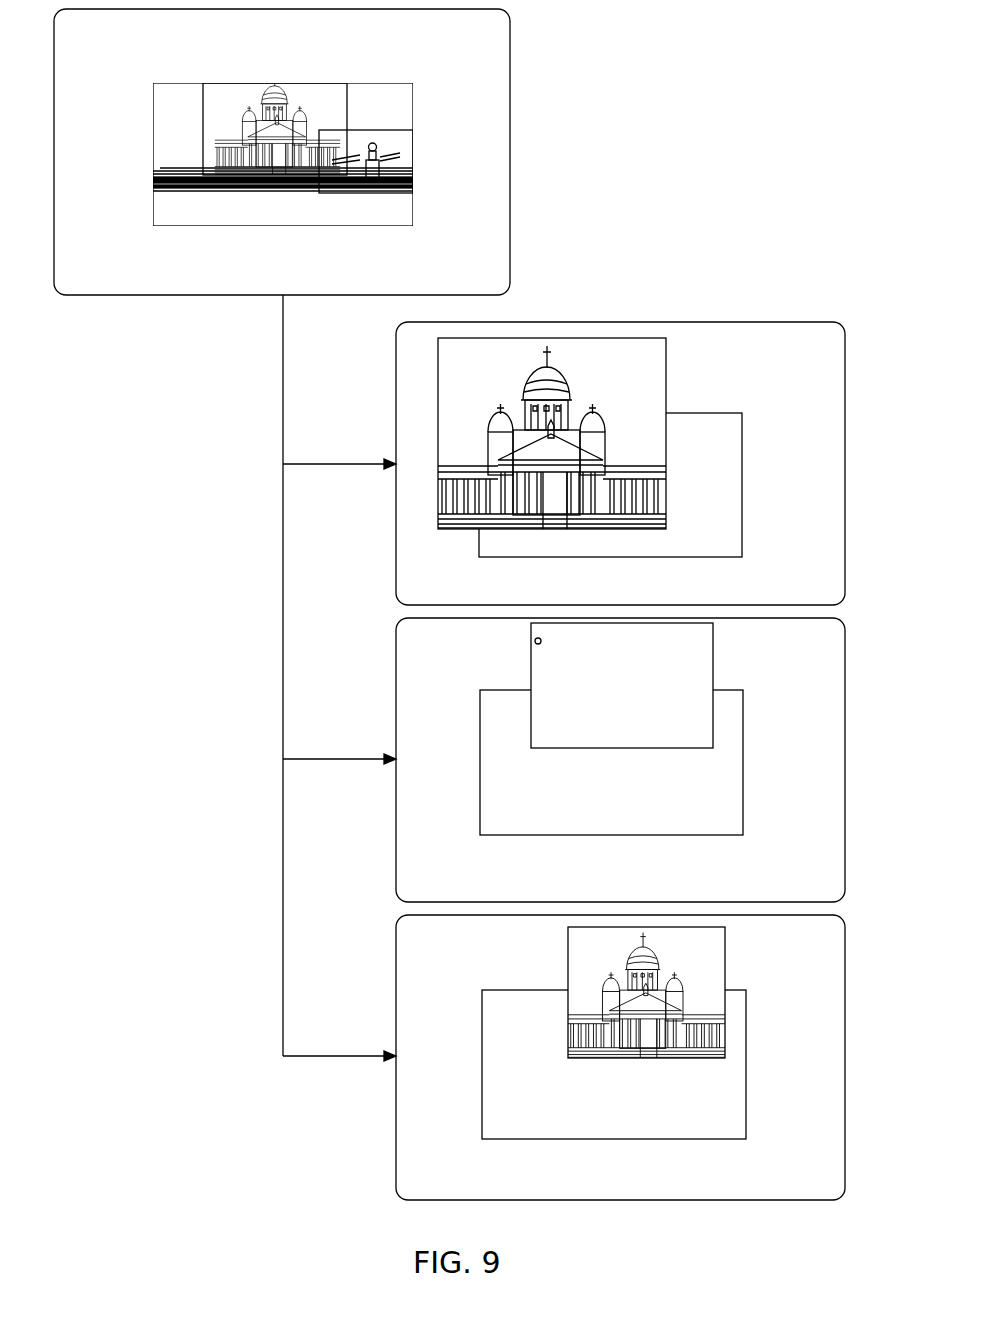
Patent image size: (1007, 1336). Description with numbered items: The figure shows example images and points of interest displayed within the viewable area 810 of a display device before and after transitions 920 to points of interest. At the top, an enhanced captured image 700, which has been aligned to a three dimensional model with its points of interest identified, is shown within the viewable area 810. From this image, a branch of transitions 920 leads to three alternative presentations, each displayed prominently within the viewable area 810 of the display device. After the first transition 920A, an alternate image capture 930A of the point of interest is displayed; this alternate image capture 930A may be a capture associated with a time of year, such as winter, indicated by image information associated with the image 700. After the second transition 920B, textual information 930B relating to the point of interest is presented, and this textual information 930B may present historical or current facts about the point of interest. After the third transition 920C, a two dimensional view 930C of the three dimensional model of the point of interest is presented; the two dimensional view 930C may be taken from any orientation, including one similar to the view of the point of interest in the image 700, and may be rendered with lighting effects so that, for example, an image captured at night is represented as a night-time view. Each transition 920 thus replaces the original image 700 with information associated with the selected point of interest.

The enhanced captured image 700 is at (393, 155).
The viewable area 810 is at (510, 153).
The transition 920 is at (283, 420).
The transition to alternate image capture 920A is at (335, 463).
The transition to textual information 920B is at (335, 758).
The transition to two dimensional view 920C is at (335, 1055).
The alternate image capture 930A is at (666, 376).
The textual information 930B is at (713, 672).
The two dimensional view 930C is at (725, 960).